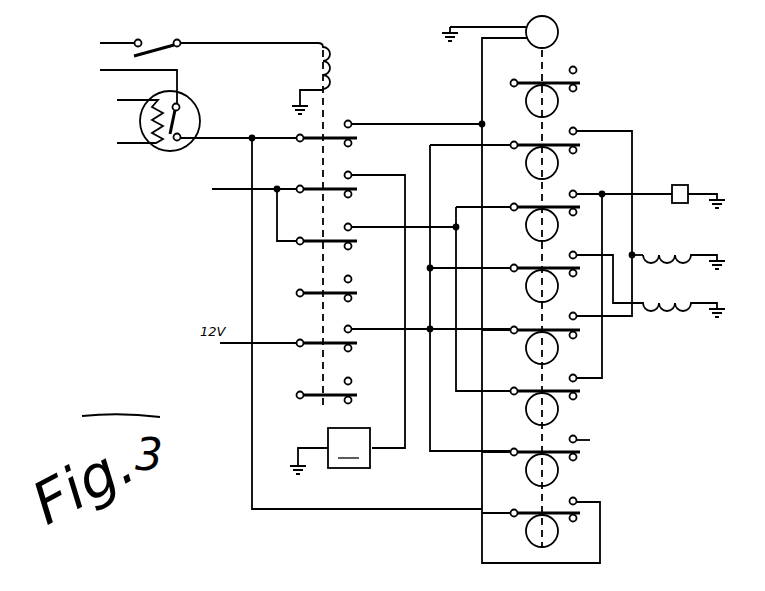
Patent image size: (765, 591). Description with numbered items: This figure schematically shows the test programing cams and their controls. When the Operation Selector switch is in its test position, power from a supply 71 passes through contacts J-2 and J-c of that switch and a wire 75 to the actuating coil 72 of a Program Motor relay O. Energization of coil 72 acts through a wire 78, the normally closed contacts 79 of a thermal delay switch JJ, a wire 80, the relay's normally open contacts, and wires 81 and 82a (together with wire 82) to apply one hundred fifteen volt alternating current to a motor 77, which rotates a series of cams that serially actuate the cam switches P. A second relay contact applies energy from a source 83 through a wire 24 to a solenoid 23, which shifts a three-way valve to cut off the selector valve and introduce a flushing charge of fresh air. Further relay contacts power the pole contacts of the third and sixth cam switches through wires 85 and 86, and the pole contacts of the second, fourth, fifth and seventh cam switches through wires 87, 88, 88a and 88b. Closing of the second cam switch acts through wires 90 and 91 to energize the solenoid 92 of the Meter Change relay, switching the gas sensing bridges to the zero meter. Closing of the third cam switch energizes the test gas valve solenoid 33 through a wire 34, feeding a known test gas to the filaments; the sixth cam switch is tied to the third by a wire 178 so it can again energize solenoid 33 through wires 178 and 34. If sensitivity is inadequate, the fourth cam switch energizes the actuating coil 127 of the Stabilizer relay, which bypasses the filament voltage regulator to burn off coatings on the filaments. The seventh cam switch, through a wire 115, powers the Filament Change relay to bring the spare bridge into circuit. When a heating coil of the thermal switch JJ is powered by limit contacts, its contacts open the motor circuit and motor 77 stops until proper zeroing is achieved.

The supply 71 is at (117, 42).
The contact of switch H J-2 is at (139, 40).
The contact of switch H J-c is at (179, 40).
The wire 75 is at (247, 42).
The actuating coil 72 is at (333, 66).
The wire 78 is at (165, 69).
The thermal delay switch JJ is at (161, 152).
The normally closed contacts 79 is at (182, 142).
The wire 80 is at (222, 136).
The source 83 is at (233, 192).
The Program Motor relay O is at (271, 116).
The wire 81 is at (408, 122).
The wire 24 is at (403, 290).
The solenoid 23 is at (330, 451).
The wire 85 is at (382, 225).
The wire 86 is at (458, 340).
The wire 87 is at (380, 336).
The wire 88 is at (430, 409).
The wire 88a is at (429, 146).
The wire 88b is at (496, 266).
The motor 77 is at (560, 33).
The wire 82a is at (482, 76).
The wire 82 is at (481, 177).
The cam switches P is at (584, 103).
The wire 90 is at (622, 131).
The wire 34 is at (657, 193).
The test gas valve solenoid 33 is at (686, 186).
The wire 178 is at (603, 363).
The wire 91 is at (642, 253).
The solenoid 92 is at (673, 254).
The actuating coil 127 is at (668, 318).
The wire 115 is at (590, 440).